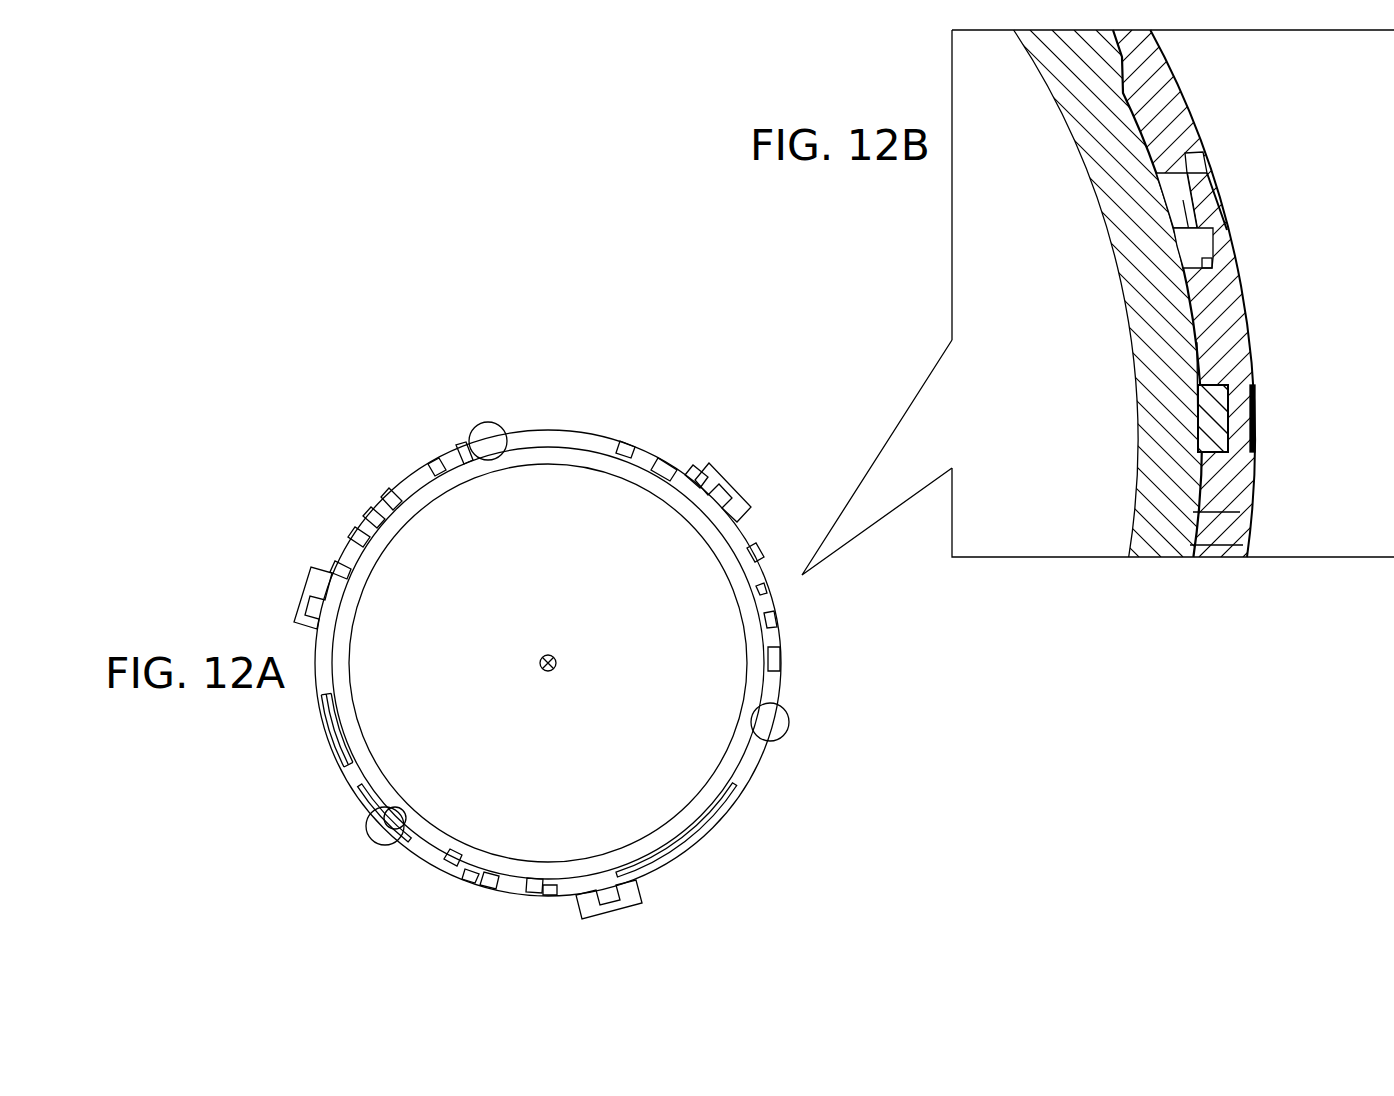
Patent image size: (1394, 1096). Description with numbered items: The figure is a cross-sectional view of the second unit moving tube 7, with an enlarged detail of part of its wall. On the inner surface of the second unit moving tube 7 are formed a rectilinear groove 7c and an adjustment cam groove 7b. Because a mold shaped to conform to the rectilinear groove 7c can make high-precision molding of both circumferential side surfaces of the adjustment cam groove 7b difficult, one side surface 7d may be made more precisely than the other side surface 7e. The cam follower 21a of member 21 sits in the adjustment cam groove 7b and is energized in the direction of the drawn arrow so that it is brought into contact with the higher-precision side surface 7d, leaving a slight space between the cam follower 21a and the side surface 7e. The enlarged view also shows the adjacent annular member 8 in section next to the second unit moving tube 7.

In FIG. 12B, the second unit moving tube 7 is at (1238, 338).
In FIG. 12B, the adjustment cam groove 7b is at (1203, 241).
In FIG. 12B, the rectilinear groove 7c is at (1227, 437).
In FIG. 12B, the side surface 7d is at (1207, 260).
In FIG. 12B, the side surface 7e is at (1188, 183).
In FIG. 12A, the annular member 8 is at (731, 767).
In FIG. 12B, the annular member 8 is at (1147, 493).
In FIG. 12A, the engaging member 21 is at (834, 600).
In FIG. 12B, the engaging member 21 is at (1258, 212).
In FIG. 12A, the cam follower 21a is at (767, 598).
In FIG. 12B, the cam follower 21a is at (1197, 205).